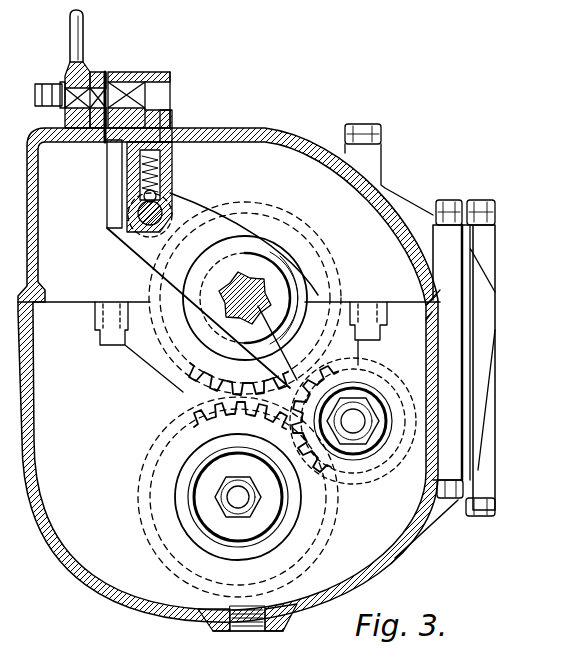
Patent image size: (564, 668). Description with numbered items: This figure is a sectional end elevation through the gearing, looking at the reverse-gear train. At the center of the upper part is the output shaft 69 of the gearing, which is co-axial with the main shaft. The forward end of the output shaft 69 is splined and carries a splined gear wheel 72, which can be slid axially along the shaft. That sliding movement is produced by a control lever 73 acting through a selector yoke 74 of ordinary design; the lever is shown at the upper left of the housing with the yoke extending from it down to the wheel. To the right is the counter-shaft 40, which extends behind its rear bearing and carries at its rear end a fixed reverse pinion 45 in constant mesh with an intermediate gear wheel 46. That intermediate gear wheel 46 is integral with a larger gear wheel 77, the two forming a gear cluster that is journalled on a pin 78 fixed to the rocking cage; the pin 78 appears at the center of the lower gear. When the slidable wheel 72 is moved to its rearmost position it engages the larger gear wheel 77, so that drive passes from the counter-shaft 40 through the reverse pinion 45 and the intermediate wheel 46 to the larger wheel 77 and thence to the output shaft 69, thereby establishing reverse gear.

The counter-shaft 40 is at (357, 421).
The pinion 45 is at (347, 474).
The pinion hub 46 is at (308, 491).
The output shaft 69 is at (262, 292).
The splined gear wheel 72 is at (192, 386).
The control lever 73 is at (84, 47).
The selector yoke 74 is at (135, 262).
The larger gear wheel 77 is at (190, 407).
The pin 78 is at (256, 503).